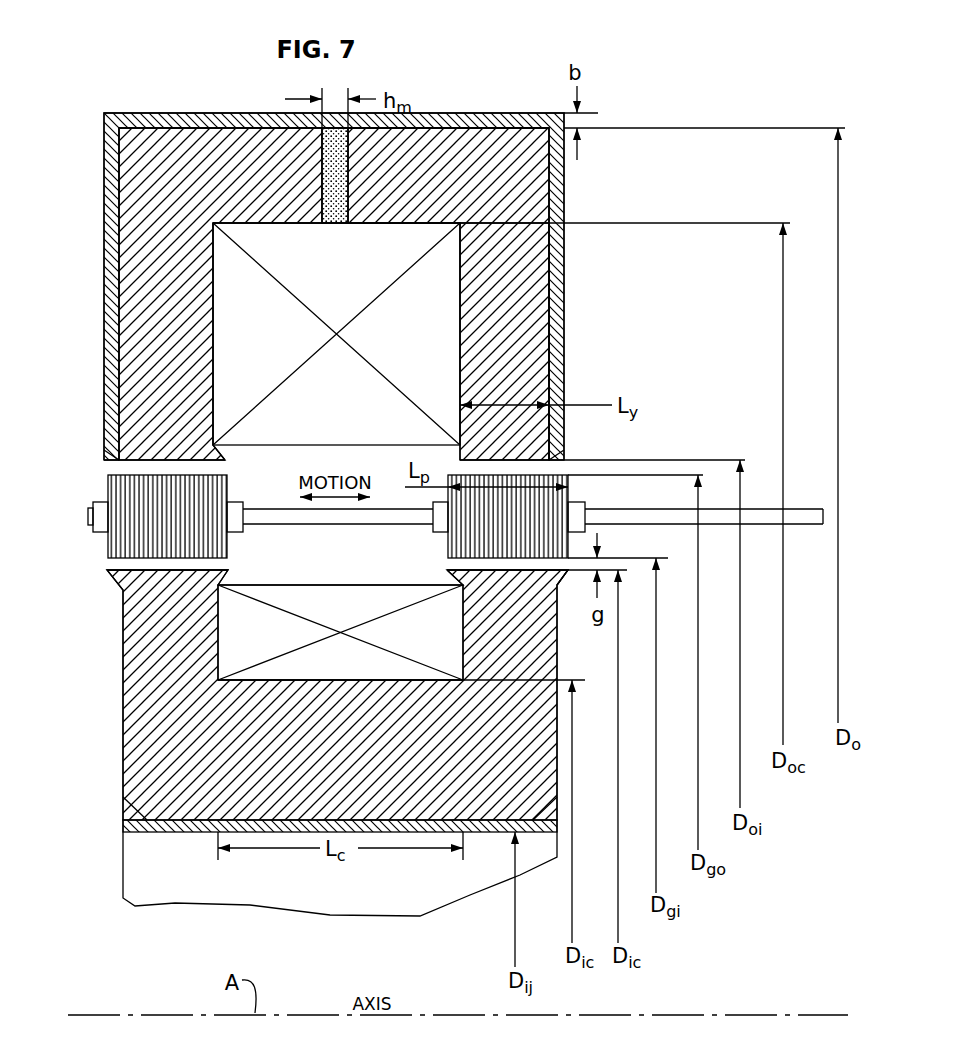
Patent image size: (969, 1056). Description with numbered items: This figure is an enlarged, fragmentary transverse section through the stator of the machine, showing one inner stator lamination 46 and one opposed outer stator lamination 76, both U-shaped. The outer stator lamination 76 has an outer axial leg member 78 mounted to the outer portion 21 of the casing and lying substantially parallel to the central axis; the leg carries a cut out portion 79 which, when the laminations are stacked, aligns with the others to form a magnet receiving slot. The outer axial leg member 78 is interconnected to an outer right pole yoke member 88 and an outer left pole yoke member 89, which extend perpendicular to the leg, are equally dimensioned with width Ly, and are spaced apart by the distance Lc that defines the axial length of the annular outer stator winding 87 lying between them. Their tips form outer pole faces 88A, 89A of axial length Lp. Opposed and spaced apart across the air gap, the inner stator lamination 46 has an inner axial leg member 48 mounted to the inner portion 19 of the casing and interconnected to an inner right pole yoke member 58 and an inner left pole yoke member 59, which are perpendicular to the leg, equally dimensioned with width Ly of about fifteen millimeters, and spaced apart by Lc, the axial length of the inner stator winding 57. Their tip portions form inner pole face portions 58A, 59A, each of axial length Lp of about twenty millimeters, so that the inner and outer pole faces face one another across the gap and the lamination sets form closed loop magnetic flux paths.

The outer stator lamination 76 is at (615, 102).
The outer portion of the casing 21 is at (175, 113).
The cut out portion 79 is at (325, 150).
The outer axial leg member 78 is at (430, 150).
The outer left pole yoke member 89 is at (137, 207).
The outer right pole yoke member 88 is at (525, 327).
The outer stator winding 87 is at (222, 282).
The outer pole face 89A is at (127, 462).
The outer pole face 88A is at (553, 465).
The inner stator lamination 46 is at (112, 843).
The inner axial leg member 48 is at (223, 802).
The inner portion of the casing 19 is at (122, 826).
The inner left pole yoke member 59 is at (157, 732).
The inner right pole yoke member 58 is at (537, 643).
The inner stator winding 57 is at (233, 657).
The inner pole face portion 59A is at (218, 569).
The inner pole face portion 58A is at (460, 575).